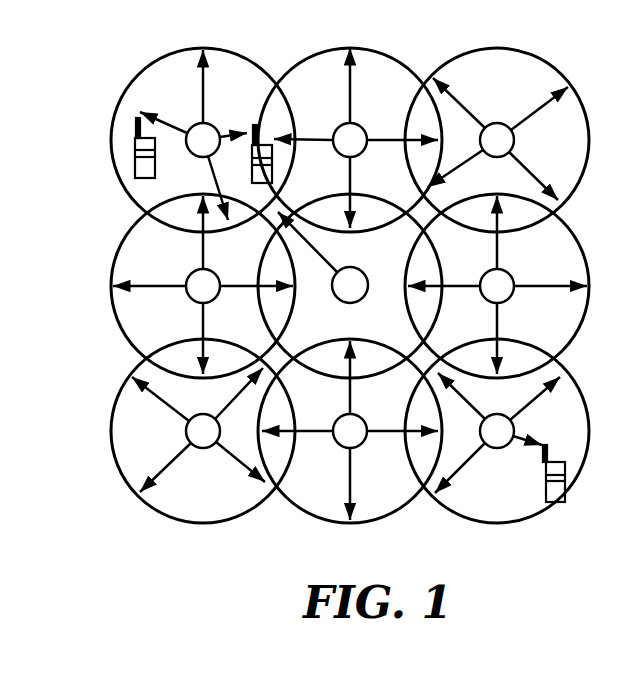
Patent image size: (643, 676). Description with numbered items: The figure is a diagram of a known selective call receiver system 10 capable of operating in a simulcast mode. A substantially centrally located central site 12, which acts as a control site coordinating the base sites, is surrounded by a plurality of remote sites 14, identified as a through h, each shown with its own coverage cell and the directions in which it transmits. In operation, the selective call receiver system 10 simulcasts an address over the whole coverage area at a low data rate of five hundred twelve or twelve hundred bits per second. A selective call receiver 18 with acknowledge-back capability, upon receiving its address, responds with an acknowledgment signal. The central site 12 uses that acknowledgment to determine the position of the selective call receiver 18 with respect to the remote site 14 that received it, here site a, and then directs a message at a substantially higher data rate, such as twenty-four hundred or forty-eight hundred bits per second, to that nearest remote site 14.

The selective call receiver system 10 is at (113, 97).
The central site 12 is at (343, 270).
The remote site 14 is at (350, 284).
The selective call receiver 18 is at (135, 130).